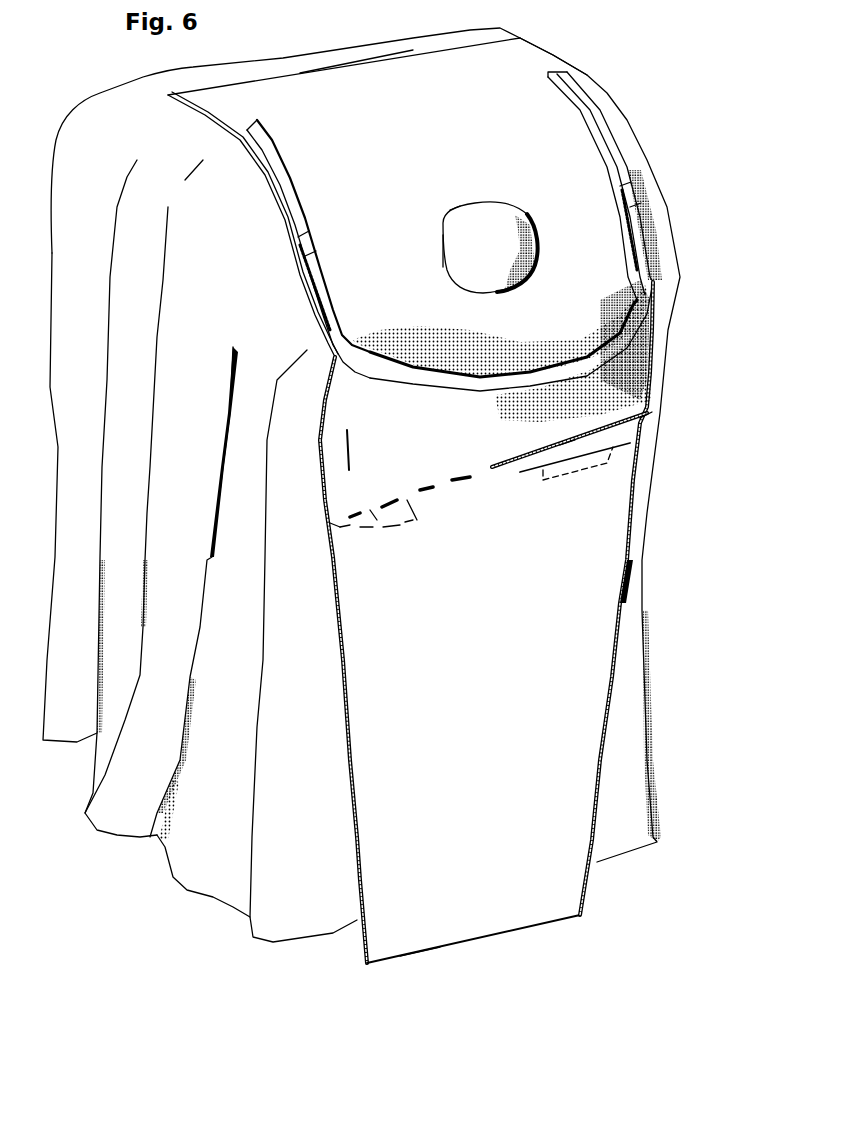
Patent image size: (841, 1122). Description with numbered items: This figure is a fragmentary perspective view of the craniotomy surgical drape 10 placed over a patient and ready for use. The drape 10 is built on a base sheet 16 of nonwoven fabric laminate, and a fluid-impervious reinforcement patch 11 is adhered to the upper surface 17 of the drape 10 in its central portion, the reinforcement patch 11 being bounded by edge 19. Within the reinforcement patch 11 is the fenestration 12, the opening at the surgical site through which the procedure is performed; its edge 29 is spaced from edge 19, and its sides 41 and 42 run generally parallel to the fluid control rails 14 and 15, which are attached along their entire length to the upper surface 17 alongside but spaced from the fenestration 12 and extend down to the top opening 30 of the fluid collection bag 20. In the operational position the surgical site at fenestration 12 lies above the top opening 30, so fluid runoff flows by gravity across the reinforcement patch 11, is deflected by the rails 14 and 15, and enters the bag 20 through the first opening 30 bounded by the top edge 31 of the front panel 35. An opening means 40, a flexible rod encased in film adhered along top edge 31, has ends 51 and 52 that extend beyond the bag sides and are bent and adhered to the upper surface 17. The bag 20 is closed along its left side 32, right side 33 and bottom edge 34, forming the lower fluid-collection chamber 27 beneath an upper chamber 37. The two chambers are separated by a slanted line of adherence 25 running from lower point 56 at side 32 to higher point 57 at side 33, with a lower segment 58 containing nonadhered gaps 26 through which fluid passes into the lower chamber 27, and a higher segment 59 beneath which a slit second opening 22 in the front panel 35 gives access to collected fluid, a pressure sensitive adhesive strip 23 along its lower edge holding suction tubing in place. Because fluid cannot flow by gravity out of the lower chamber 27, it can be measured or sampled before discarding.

The surgical drape 10 is at (166, 878).
The reinforcement patch 11 is at (530, 57).
The fenestration 12 is at (500, 222).
The fluid control rail 14 is at (287, 143).
The fluid control rail 15 is at (560, 84).
The base sheet 16 is at (103, 167).
The upper surface 17 is at (322, 66).
The edge of reinforcement patch 19 is at (412, 62).
The fluid collection bag 20 is at (614, 768).
The second opening 22 is at (530, 472).
The pressure sensitive adhesive strip 23 is at (587, 463).
The line of adherence 25 is at (510, 457).
The nonadhered gaps 26 is at (410, 517).
The lower fluid-collection chamber 27 is at (451, 920).
The edge of fenestration 29 is at (467, 212).
The first opening 30 is at (548, 352).
The top edge of front panel 31 is at (430, 380).
The left side 32 is at (347, 753).
The right side 33 is at (617, 677).
The bottom edge 34 is at (528, 928).
The front panel 35 is at (498, 664).
The upper chamber 37 is at (353, 447).
The opening means 40 is at (490, 378).
The side of fenestration 41 is at (443, 252).
The side of fenestration 42 is at (543, 236).
The end of opening means 51 is at (290, 247).
The end of opening means 52 is at (627, 197).
The lower point of line of adherence 56 is at (330, 523).
The higher point of line of adherence 57 is at (648, 410).
The lower segment of line of adherence 58 is at (395, 493).
The higher segment of line of adherence 59 is at (563, 441).